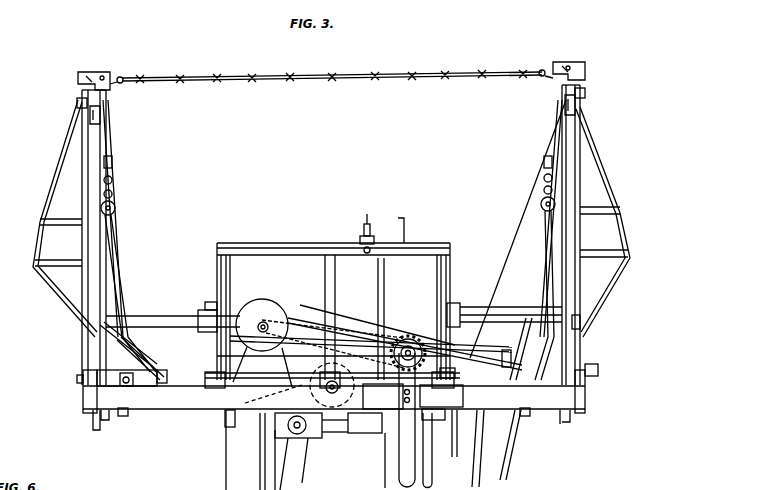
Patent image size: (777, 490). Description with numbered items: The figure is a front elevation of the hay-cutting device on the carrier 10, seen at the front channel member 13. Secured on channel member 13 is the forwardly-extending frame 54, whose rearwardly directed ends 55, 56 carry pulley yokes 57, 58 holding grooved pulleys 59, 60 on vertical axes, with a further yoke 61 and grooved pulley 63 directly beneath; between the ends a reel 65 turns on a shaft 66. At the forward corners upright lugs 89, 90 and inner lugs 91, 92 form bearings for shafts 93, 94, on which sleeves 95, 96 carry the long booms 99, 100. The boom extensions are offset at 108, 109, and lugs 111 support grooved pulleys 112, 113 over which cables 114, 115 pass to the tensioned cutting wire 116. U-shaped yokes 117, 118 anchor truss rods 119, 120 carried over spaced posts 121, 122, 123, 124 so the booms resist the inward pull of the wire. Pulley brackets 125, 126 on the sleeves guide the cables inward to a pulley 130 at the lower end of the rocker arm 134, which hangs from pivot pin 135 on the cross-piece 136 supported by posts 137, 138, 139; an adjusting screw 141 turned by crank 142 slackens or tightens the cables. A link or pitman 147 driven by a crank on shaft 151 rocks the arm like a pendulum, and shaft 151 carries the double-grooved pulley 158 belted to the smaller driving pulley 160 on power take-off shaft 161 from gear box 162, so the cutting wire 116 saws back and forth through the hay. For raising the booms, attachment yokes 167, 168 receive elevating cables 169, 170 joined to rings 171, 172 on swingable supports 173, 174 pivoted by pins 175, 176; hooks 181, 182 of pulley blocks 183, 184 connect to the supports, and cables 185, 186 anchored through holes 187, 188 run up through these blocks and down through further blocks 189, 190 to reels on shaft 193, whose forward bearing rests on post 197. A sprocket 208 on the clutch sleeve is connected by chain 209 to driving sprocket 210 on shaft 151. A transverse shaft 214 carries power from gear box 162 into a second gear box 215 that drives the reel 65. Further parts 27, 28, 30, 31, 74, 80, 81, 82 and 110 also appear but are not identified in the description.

The carrier 10 is at (156, 420).
The front channel member 13 is at (498, 410).
The shaft 27 is at (450, 339).
The bearing 28 is at (457, 302).
The bearing 30 is at (212, 343).
The bearing 31 is at (212, 302).
The forwardly-extending frame 54 is at (382, 440).
The end of frame 55 is at (466, 397).
The end of frame 56 is at (210, 410).
The pulley yoke 57 is at (456, 372).
The pulley yoke 58 is at (196, 386).
The grooved pulley 59 is at (441, 402).
The grooved pulley 60 is at (230, 409).
The pulley yoke 61 is at (447, 444).
The grooved pulley 63 is at (432, 418).
The reel 65 is at (332, 385).
The shaft 66 is at (322, 386).
The arm 74 is at (407, 420).
The connecting rod 80 is at (304, 312).
The rod 81 is at (506, 312).
The rod 82 is at (152, 315).
The upright lug 89 is at (586, 396).
The upright lug 90 is at (82, 408).
The lug 91 is at (504, 352).
The lug 92 is at (155, 364).
The shaft 93 is at (598, 366).
The shaft 94 is at (76, 379).
The sleeve 95 is at (518, 412).
The sleeve 96 is at (144, 388).
The boom 99 is at (570, 158).
The boom 100 is at (75, 168).
The offset 108 is at (586, 70).
The offset 109 is at (78, 82).
The pivot 110 is at (572, 66).
The lug 111 is at (102, 74).
The grooved pulley 112 is at (546, 76).
The grooved pulley 113 is at (121, 84).
The cable 114 is at (582, 232).
The cable 115 is at (82, 256).
The cutting wire 116 is at (306, 78).
The U-shaped yoke 117 is at (585, 93).
The U-shaped yoke 118 is at (77, 104).
The truss rod 119 is at (602, 163).
The truss rod 120 is at (62, 188).
The post 121 is at (602, 206).
The post 122 is at (627, 260).
The post 123 is at (52, 228).
The post 124 is at (55, 270).
The pulley bracket 125 is at (582, 321).
The pulley bracket 126 is at (95, 332).
The pulley 130 is at (313, 450).
The rocker arm 134 is at (377, 270).
The pivot pin 135 is at (354, 243).
The upper cross-piece 136 is at (283, 243).
The post 137 is at (451, 268).
The post 138 is at (324, 270).
The post 139 is at (231, 268).
The adjusting screw 141 is at (368, 214).
The crank 142 is at (404, 222).
The link or pitman 147 is at (356, 352).
The shaft 151 is at (252, 324).
The double-grooved pulley 158 is at (270, 298).
The driving pulley 160 is at (296, 440).
The power take-off shaft 161 is at (294, 462).
The gear box 162 is at (318, 438).
The attachment yoke 167 is at (564, 100).
The attachment yoke 168 is at (102, 113).
The elevating cable 169 is at (560, 137).
The elevating cable 170 is at (108, 146).
The ring 171 is at (544, 164).
The ring 172 is at (112, 164).
The swingable support 173 is at (544, 178).
The swingable support 174 is at (112, 180).
The pivot pin 175 is at (544, 191).
The pivot pin 176 is at (112, 194).
The upper hook 181 is at (541, 206).
The upper hook 182 is at (104, 203).
The pulley block 183 is at (545, 214).
The pulley block 184 is at (115, 210).
The cable 185 is at (573, 408).
The cable 186 is at (97, 422).
The hole 187 is at (560, 412).
The hole 188 is at (108, 412).
The block 189 is at (526, 416).
The block 190 is at (124, 417).
The shaft 193 is at (396, 318).
The post 197 is at (383, 396).
The sprocket 208 is at (412, 336).
The chain 209 is at (346, 313).
The driving sprocket 210 is at (262, 290).
The transverse shaft 214 is at (345, 436).
The second gear box 215 is at (352, 422).